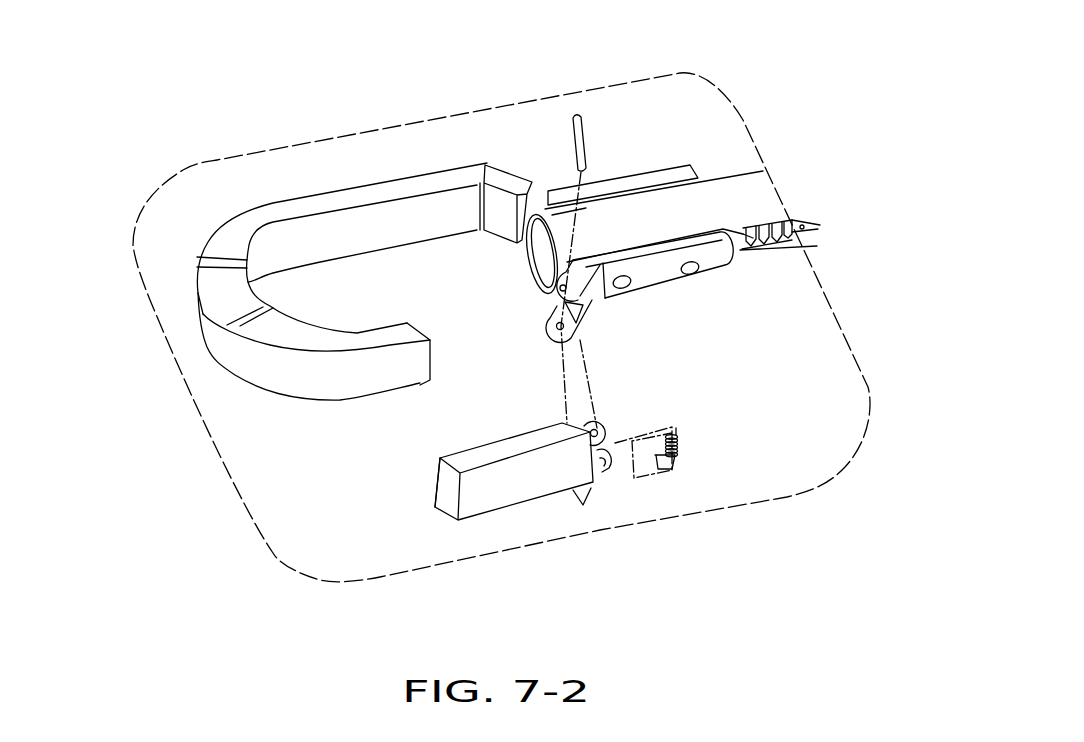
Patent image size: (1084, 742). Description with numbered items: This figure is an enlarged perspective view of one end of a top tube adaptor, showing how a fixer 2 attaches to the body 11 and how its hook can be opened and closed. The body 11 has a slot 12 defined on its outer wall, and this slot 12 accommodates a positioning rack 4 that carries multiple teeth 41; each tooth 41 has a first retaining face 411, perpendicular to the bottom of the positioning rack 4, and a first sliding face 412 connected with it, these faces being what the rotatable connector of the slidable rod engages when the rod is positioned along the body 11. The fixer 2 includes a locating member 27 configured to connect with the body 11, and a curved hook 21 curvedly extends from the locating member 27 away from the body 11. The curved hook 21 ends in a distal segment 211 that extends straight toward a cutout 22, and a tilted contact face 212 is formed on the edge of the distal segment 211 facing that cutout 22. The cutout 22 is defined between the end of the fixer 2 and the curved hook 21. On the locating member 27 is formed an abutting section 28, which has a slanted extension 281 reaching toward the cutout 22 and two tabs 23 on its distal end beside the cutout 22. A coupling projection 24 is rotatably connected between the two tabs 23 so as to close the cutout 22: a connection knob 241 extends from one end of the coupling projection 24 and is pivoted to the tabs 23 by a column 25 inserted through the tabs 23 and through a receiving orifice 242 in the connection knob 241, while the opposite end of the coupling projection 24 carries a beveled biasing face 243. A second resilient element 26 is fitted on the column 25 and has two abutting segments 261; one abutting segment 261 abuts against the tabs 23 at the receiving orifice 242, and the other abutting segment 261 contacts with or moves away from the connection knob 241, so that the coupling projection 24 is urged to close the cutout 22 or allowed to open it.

The fixer 2 is at (292, 315).
The curved hook 21 is at (298, 315).
The distal segment 211 is at (373, 382).
The tilted contact face 212 is at (420, 333).
The cutout 22 is at (487, 341).
The tabs 23 is at (548, 290).
The coupling projection 24 is at (533, 516).
The connection knob 241 is at (600, 462).
The receiving orifice 242 is at (608, 465).
The beveled biasing face 243 is at (445, 485).
The column 25 is at (584, 128).
The second resilient element 26 is at (729, 508).
The abutting segments 261 is at (658, 470).
The locating member 27 is at (663, 163).
The abutting section 28 is at (663, 280).
The slanted extension 281 is at (590, 308).
The body 11 is at (730, 183).
The slot 12 is at (753, 238).
The positioning rack 4 is at (830, 247).
The teeth 41 is at (830, 262).
The first retaining face 411 is at (767, 235).
The first sliding face 412 is at (778, 232).